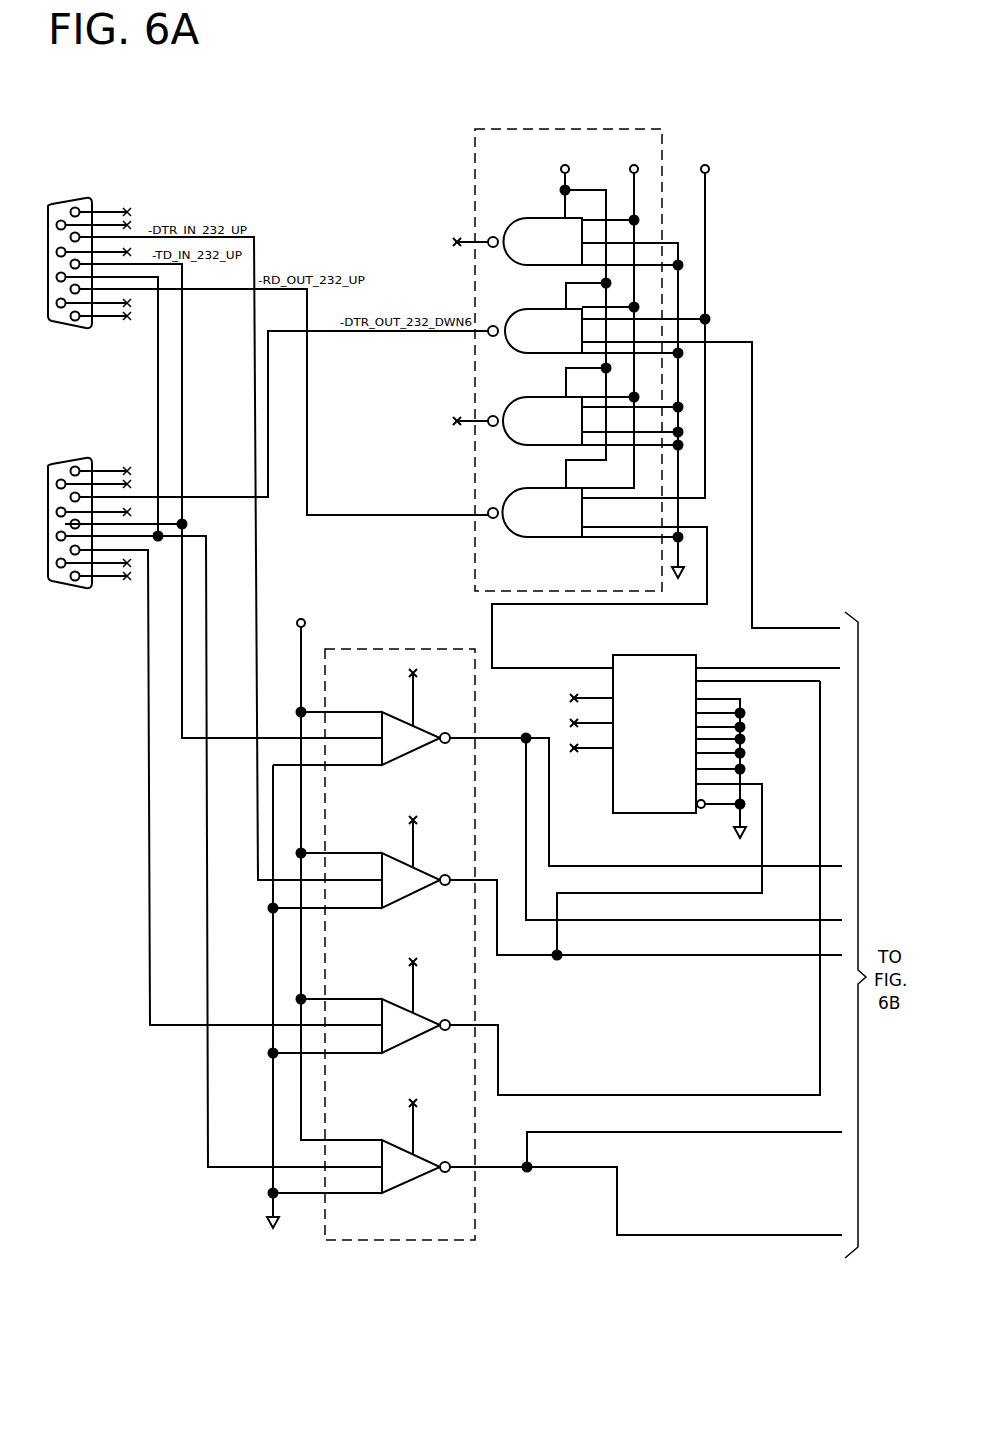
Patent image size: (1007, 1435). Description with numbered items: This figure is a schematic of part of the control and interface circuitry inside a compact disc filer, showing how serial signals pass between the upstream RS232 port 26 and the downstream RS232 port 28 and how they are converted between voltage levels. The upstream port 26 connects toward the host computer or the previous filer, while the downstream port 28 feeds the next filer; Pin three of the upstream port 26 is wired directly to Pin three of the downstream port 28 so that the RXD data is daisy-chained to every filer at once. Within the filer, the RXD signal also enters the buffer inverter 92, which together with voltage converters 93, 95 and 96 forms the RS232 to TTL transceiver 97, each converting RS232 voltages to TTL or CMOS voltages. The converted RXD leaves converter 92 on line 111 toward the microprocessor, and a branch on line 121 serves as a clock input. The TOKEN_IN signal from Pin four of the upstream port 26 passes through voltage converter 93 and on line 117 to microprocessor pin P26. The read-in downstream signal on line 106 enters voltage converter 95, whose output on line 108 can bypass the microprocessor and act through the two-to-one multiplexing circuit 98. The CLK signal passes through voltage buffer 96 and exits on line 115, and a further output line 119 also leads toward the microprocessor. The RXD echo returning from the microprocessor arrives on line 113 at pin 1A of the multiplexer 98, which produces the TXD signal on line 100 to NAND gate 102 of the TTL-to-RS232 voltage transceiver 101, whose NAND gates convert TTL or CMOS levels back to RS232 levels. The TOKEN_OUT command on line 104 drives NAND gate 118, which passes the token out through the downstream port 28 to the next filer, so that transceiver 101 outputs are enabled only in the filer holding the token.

The upstream RS232 port 26 is at (86, 241).
The downstream RS232 port 28 is at (92, 507).
The TTL-to-RS232 voltage transceiver 101 is at (552, 365).
The NAND gate 118 is at (515, 344).
The NAND gate 102 is at (522, 536).
The TOKEN_OUT line 104 is at (803, 628).
The TXD line 100 is at (540, 668).
The two-to-one multiplexing circuit 98 is at (667, 655).
The multiplexer input pin 1A is at (742, 668).
The RXD echo line 113 is at (790, 682).
The clock input line 121 is at (778, 858).
The buffer inverter 92 is at (413, 737).
The voltage converter 93 is at (413, 879).
The voltage converter 95 is at (416, 1020).
The voltage buffer 96 is at (416, 1163).
The RS232 to TTL transceiver 97 is at (408, 923).
The RD IN 232 DWN line 106 is at (149, 860).
The RXD output line 111 is at (781, 920).
The microprocessor input pin P26 is at (605, 955).
The TOKEN_IN line 117 is at (795, 955).
The bypass output line 108 is at (762, 1095).
The CLK line 119 is at (718, 1132).
The CLK line 115 is at (650, 1235).